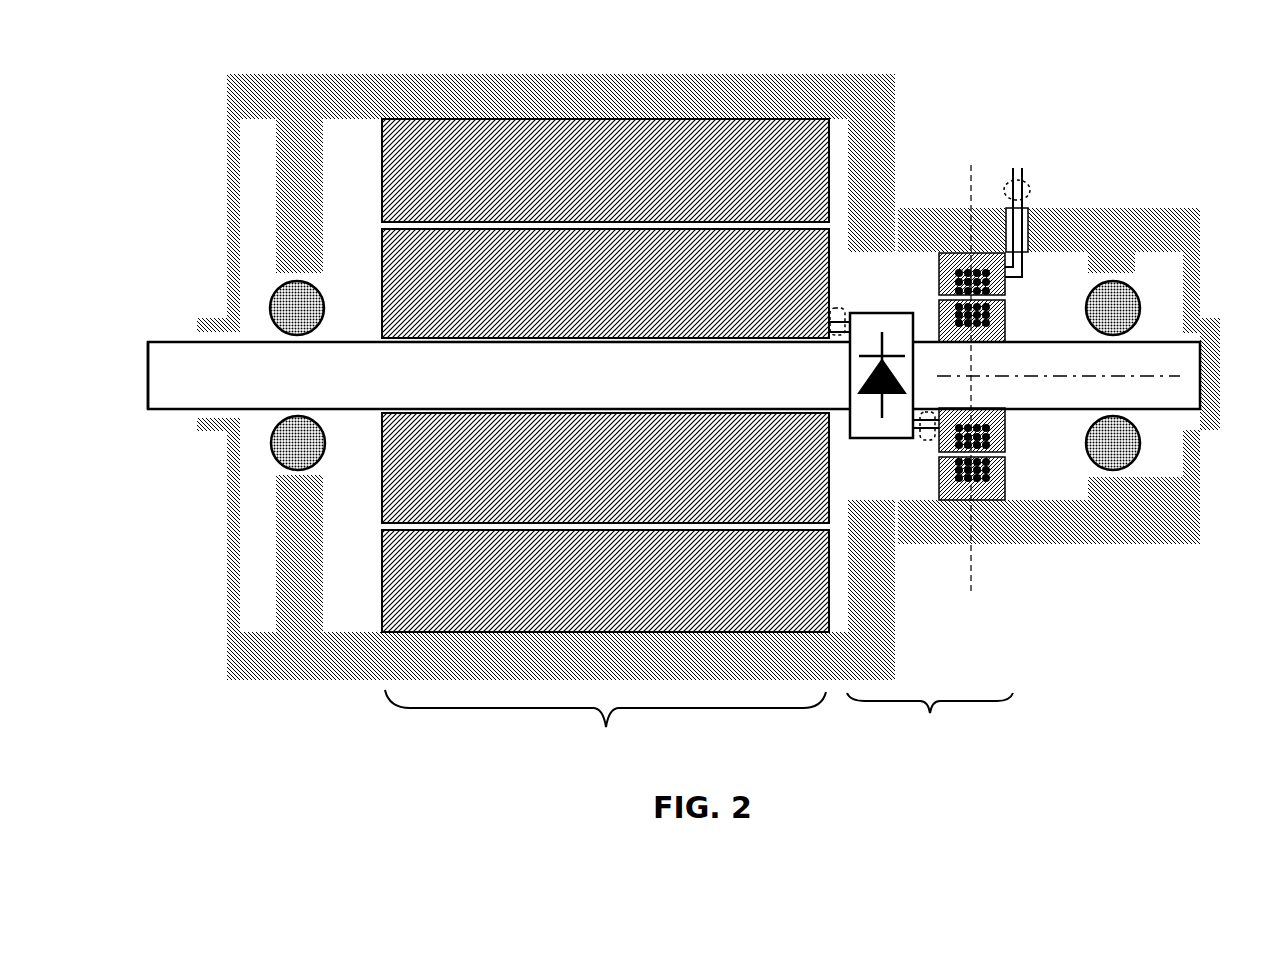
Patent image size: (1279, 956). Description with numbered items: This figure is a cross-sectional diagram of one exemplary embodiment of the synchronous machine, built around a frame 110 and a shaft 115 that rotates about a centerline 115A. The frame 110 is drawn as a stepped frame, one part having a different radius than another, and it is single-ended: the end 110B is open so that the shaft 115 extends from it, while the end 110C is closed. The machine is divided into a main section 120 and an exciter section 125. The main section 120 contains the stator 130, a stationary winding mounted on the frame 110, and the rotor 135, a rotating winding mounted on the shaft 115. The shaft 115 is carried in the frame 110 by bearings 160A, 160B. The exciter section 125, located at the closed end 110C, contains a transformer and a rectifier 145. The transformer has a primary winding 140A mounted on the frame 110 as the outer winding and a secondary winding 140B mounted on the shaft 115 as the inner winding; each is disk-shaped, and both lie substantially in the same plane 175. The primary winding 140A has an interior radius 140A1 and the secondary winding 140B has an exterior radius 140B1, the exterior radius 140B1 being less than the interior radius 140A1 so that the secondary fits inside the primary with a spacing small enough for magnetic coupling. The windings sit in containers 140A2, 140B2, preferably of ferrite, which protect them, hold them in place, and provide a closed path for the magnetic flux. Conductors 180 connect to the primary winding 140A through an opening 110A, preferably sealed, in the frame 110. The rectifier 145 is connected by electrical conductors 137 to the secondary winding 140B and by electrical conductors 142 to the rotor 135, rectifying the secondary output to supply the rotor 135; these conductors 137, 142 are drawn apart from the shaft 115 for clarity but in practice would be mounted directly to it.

The frame 110 is at (577, 106).
The opening 110A is at (1029, 207).
The open end 110B is at (182, 418).
The closed end 110C is at (1222, 317).
The shaft 115 is at (450, 389).
The centerline 115A is at (1058, 364).
The main section 120 is at (605, 724).
The exciter section 125 is at (930, 721).
The stator 130 is at (577, 178).
The rotor 135 is at (577, 305).
The electrical conductors 137 is at (929, 444).
The primary winding 140A is at (993, 472).
The interior radius 140A1 is at (1010, 456).
The container 140A2 is at (994, 497).
The secondary winding 140B is at (950, 318).
The exterior radius 140B1 is at (1010, 300).
The container 140B2 is at (935, 296).
The electrical conductors 142 is at (840, 311).
The rectifier 145 is at (879, 446).
The bearing 160A is at (277, 291).
The bearing 160B is at (1137, 464).
The plane 175 is at (979, 368).
The conductors 180 is at (1033, 186).